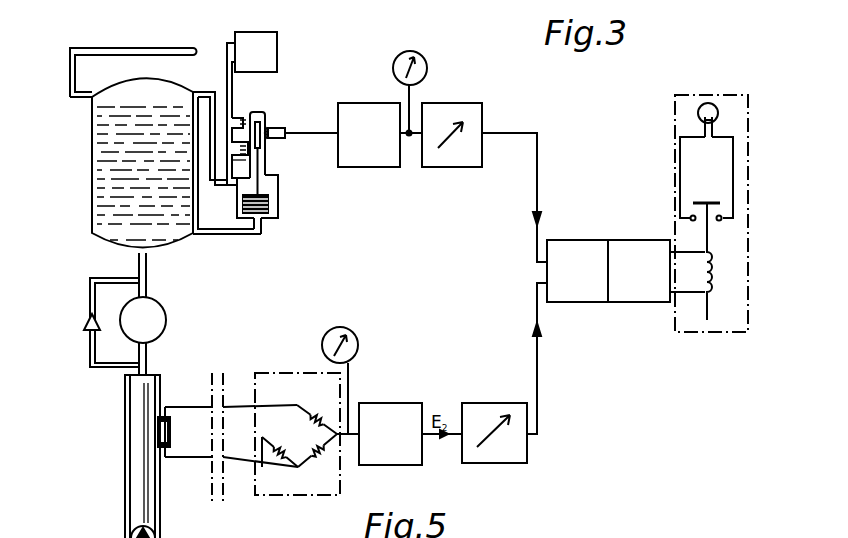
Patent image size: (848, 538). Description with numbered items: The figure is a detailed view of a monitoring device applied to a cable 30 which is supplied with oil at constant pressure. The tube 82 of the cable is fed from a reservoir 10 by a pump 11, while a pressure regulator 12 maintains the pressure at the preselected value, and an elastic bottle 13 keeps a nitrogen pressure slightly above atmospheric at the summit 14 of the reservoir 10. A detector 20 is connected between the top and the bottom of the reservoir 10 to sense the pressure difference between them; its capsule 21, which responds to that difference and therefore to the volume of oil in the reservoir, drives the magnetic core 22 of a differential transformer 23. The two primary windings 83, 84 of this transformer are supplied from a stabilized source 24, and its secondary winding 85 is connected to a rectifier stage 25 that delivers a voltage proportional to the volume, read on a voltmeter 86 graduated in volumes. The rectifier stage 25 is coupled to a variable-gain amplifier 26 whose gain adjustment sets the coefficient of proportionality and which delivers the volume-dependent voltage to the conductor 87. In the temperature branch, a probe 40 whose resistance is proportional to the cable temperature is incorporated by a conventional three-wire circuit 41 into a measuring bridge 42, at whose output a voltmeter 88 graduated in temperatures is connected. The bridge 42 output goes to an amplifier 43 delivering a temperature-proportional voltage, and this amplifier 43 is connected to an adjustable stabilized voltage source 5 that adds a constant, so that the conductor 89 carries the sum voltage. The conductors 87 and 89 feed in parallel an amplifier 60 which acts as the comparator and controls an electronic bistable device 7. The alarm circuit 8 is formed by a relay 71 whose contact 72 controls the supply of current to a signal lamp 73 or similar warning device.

The adjustable stabilized voltage source 5 is at (493, 453).
The electronic bistable device 7 is at (628, 253).
The alarm circuit 8 is at (715, 333).
The reservoir 10 is at (113, 153).
The pump 11 is at (157, 318).
The pressure regulator 12 is at (88, 322).
The elastic bottle 13 is at (138, 47).
The summit of the reservoir 14 is at (115, 97).
The detector 20 is at (263, 222).
The capsule 21 is at (268, 208).
The magnetic core 22 is at (263, 125).
The differential transformer 23 is at (258, 113).
The stabilized source 24 is at (277, 52).
The rectifier stage 25 is at (380, 110).
The variable-gain amplifier 26 is at (443, 110).
The cable 30 is at (124, 460).
The probe 40 is at (172, 430).
The 3-wire circuit 41 is at (187, 460).
The measuring bridge 42 is at (302, 492).
The amplifier 43 is at (388, 457).
The amplifier 60 is at (570, 250).
The relay 71 is at (715, 265).
The contact 72 is at (698, 200).
The signal lamp 73 is at (701, 108).
The tube 82 is at (137, 497).
The primary winding 83 is at (243, 122).
The primary winding 84 is at (242, 152).
The secondary winding 85 is at (277, 142).
The voltmeter 86 is at (427, 68).
The conductor 87 is at (538, 187).
The voltmeter 88 is at (358, 345).
The conductor 89 is at (537, 350).